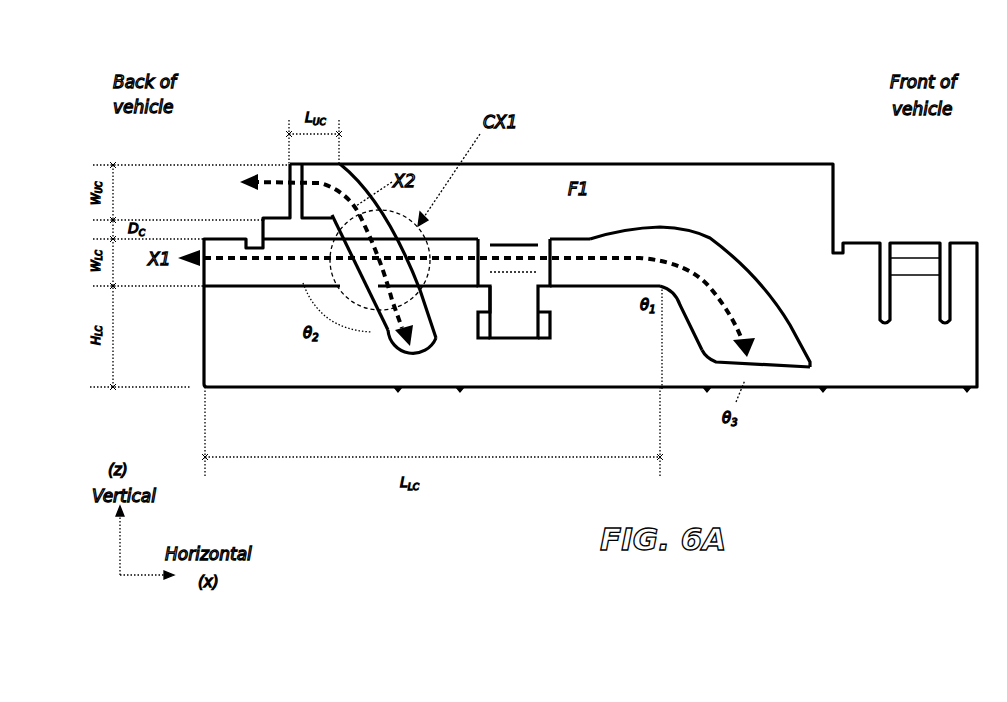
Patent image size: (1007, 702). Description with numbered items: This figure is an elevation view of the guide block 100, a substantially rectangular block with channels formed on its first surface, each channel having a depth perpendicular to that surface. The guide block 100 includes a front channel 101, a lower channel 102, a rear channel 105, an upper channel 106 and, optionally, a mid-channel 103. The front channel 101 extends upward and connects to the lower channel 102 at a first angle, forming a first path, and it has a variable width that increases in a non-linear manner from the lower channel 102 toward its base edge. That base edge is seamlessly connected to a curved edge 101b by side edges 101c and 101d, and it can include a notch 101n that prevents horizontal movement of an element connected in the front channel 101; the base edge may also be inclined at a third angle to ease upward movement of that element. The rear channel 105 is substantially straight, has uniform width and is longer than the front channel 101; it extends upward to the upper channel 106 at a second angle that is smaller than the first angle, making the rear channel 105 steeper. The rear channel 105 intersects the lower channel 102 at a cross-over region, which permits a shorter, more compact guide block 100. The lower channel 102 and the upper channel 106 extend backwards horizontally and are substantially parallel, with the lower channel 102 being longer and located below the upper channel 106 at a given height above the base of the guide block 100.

The guide block 100 is at (638, 126).
The front channel 101 is at (752, 286).
The curved edge 101b is at (712, 234).
The side edge 101c is at (680, 315).
The side edge 101d is at (792, 360).
The notch 101n is at (718, 360).
The lower channel 102 is at (574, 272).
The mid-channel 103 is at (510, 312).
The rear channel 105 is at (398, 362).
The upper channel 106 is at (296, 214).